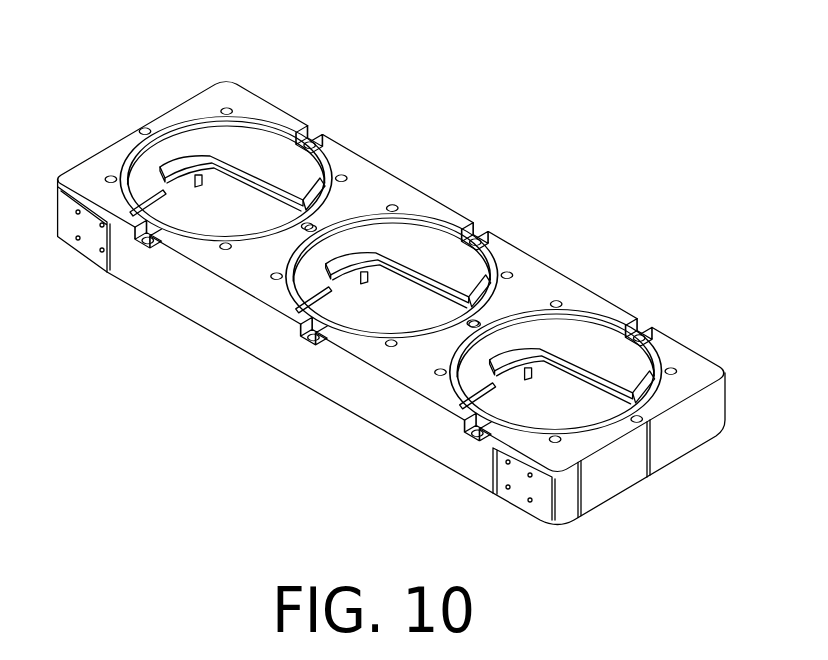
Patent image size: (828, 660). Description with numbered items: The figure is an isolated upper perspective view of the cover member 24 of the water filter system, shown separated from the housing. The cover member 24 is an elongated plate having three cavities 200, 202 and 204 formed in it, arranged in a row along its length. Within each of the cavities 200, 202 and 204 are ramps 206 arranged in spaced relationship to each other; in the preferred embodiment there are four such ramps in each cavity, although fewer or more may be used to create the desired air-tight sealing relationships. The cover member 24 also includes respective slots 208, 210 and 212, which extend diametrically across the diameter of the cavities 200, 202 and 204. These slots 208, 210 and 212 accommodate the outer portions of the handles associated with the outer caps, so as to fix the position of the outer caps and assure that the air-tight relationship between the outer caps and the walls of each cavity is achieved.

The cover member 24 is at (572, 268).
The cavity 200 is at (259, 148).
The cavity 202 is at (429, 235).
The cavity 204 is at (597, 335).
The ramps 206 is at (217, 176).
The slot 208 is at (308, 131).
The slot 210 is at (476, 235).
The slot 212 is at (643, 328).